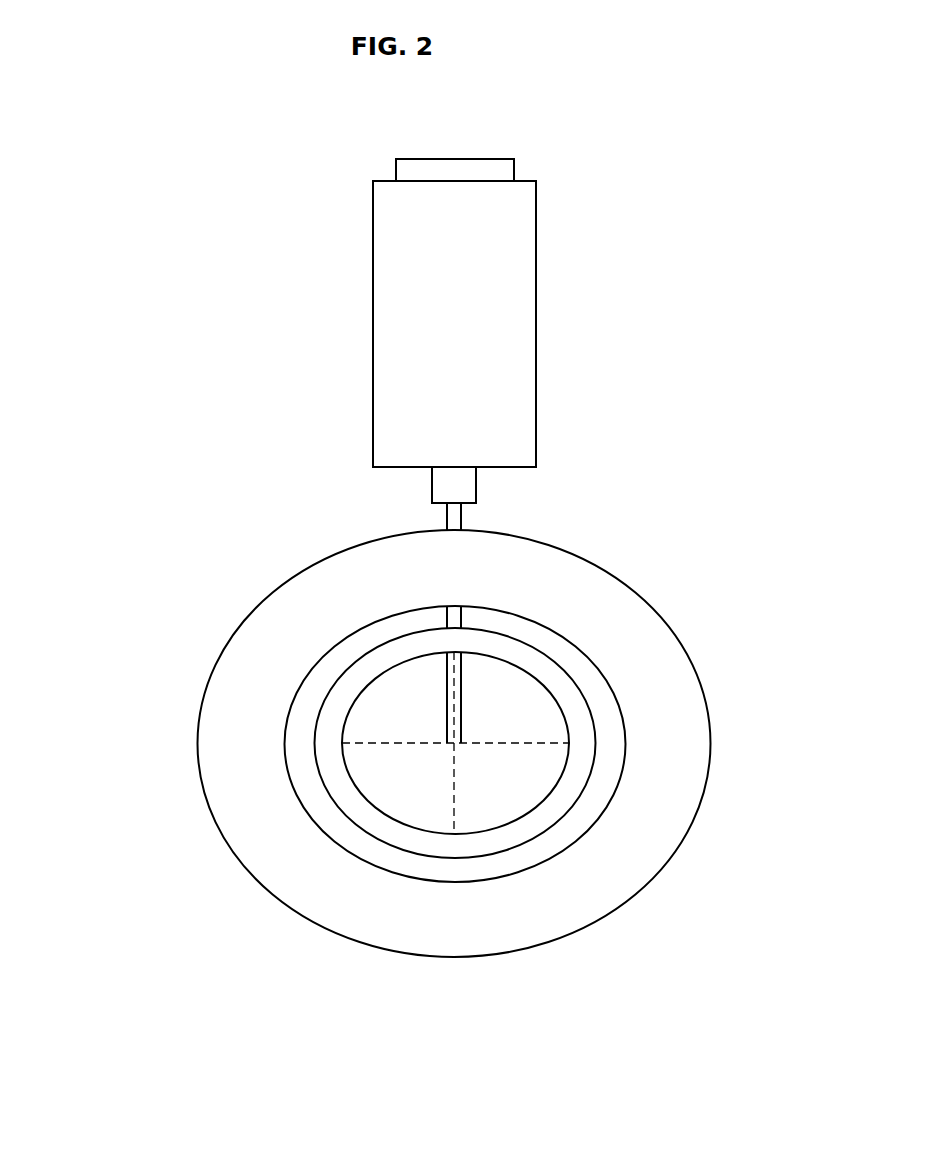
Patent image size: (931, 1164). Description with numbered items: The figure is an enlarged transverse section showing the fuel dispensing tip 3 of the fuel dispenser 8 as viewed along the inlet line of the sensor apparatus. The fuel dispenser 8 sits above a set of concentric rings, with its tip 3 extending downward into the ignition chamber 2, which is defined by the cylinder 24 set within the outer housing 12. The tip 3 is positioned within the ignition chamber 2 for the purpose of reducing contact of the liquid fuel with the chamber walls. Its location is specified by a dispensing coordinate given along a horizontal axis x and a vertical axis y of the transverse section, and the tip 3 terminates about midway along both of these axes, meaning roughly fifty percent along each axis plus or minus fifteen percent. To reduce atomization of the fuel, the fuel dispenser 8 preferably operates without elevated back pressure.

The ignition chamber 2 is at (511, 694).
The fuel dispensing tip 3 is at (454, 743).
The fuel dispenser 8 is at (373, 314).
The housing 12 is at (660, 868).
The cylinder 24 is at (358, 665).
The horizontal axis x is at (330, 745).
The vertical axis y is at (462, 844).